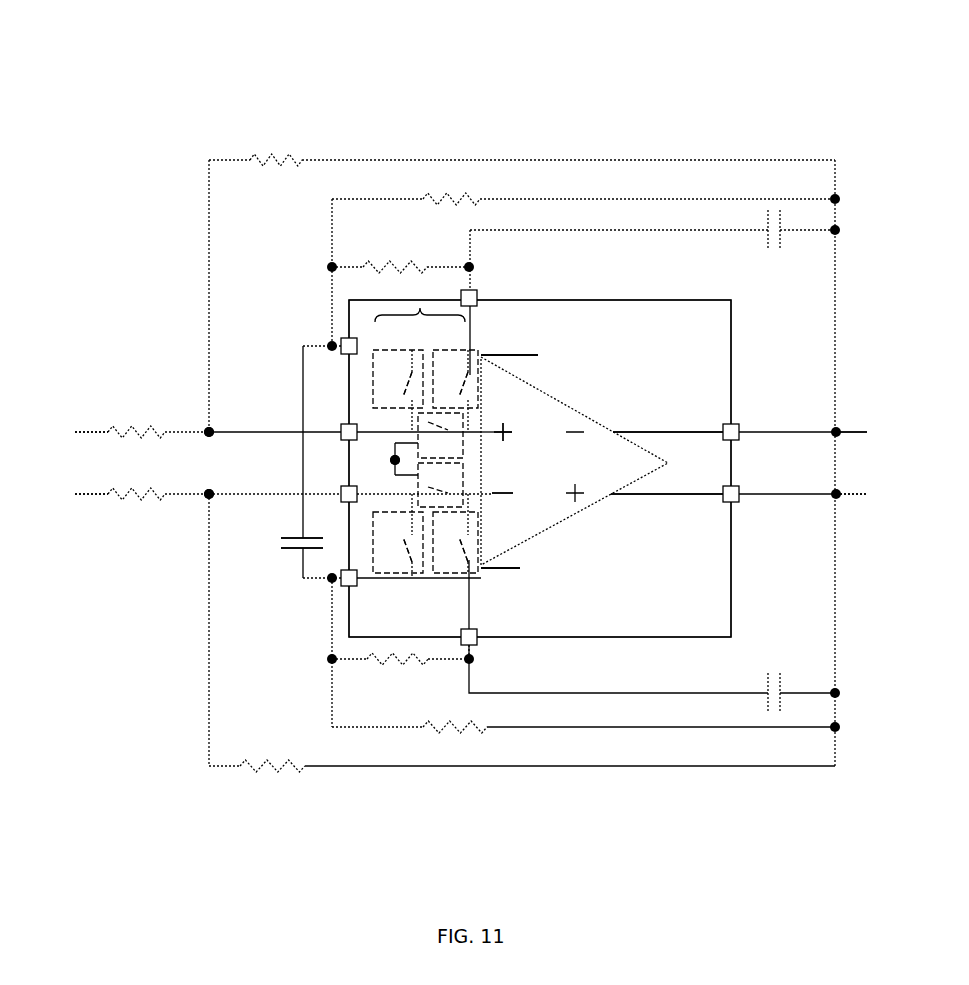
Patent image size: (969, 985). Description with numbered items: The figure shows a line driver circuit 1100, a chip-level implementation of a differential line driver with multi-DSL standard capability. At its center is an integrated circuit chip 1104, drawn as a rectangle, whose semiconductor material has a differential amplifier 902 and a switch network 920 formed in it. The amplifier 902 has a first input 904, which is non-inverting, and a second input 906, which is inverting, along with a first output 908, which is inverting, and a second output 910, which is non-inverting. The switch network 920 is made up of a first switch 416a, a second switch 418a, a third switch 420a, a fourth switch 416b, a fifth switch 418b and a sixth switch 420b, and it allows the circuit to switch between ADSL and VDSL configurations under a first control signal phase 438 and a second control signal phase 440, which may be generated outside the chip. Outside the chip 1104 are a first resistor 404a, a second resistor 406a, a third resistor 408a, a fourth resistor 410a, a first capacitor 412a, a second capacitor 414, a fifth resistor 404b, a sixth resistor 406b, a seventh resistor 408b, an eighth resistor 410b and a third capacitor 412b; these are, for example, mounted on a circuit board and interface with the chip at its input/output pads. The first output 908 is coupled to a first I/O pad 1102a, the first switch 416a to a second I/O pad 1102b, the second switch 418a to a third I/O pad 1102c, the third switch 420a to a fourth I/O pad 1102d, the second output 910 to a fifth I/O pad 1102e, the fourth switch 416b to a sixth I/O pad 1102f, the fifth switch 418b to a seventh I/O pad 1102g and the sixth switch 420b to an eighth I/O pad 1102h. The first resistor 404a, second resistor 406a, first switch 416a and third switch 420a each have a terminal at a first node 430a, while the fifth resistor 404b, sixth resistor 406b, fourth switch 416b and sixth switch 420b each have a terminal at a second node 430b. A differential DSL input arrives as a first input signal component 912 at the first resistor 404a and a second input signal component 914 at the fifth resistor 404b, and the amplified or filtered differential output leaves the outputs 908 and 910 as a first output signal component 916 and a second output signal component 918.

The line driver circuit 1100 is at (203, 35).
The first resistor 404a is at (158, 420).
The fifth resistor 404b is at (160, 490).
The second resistor 406a is at (250, 152).
The sixth resistor 406b is at (278, 762).
The third resistor 408a is at (420, 268).
The seventh resistor 408b is at (425, 660).
The fourth resistor 410a is at (468, 185).
The eighth resistor 410b is at (428, 730).
The first capacitor 412a is at (770, 250).
The third capacitor 412b is at (770, 673).
The second capacitor 414 is at (285, 550).
The first switch 416a is at (484, 442).
The fourth switch 416b is at (509, 508).
The second switch 418a is at (478, 352).
The fifth switch 418b is at (470, 575).
The third switch 420a is at (425, 364).
The sixth switch 420b is at (385, 580).
The first node 430a is at (209, 425).
The second node 430b is at (209, 500).
The first control signal phase 438 is at (385, 462).
The second control signal phase 440 is at (520, 355).
The differential amplifier 902 is at (572, 405).
The first input 904 is at (485, 428).
The second input 906 is at (485, 492).
The first output 908 is at (620, 430).
The second output 910 is at (615, 496).
The first input signal component 912 is at (88, 430).
The second input signal component 914 is at (88, 492).
The first output signal component 916 is at (845, 430).
The second output signal component 918 is at (845, 492).
The switch network 920 is at (415, 312).
The first I/O pad 1102a is at (740, 428).
The second I/O pad 1102b is at (345, 426).
The third I/O pad 1102c is at (476, 292).
The fourth I/O pad 1102d is at (345, 340).
The fifth I/O pad 1102e is at (740, 490).
The sixth I/O pad 1102f is at (345, 488).
The seventh I/O pad 1102g is at (478, 645).
The eighth I/O pad 1102h is at (345, 586).
The integrated circuit chip 1104 is at (582, 300).